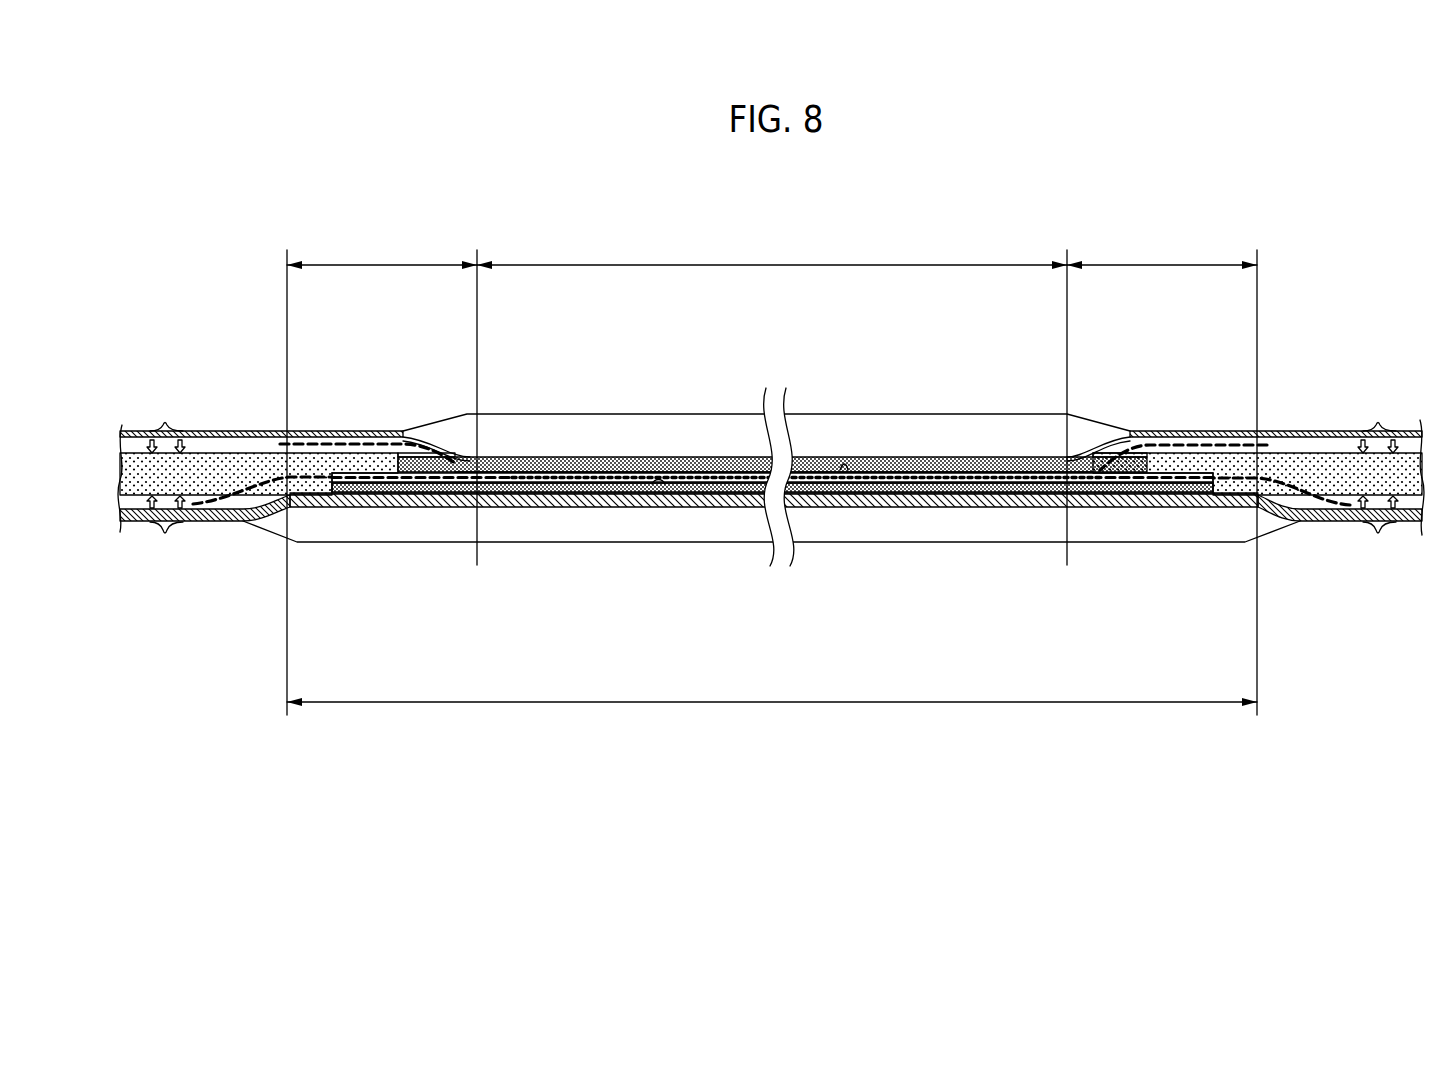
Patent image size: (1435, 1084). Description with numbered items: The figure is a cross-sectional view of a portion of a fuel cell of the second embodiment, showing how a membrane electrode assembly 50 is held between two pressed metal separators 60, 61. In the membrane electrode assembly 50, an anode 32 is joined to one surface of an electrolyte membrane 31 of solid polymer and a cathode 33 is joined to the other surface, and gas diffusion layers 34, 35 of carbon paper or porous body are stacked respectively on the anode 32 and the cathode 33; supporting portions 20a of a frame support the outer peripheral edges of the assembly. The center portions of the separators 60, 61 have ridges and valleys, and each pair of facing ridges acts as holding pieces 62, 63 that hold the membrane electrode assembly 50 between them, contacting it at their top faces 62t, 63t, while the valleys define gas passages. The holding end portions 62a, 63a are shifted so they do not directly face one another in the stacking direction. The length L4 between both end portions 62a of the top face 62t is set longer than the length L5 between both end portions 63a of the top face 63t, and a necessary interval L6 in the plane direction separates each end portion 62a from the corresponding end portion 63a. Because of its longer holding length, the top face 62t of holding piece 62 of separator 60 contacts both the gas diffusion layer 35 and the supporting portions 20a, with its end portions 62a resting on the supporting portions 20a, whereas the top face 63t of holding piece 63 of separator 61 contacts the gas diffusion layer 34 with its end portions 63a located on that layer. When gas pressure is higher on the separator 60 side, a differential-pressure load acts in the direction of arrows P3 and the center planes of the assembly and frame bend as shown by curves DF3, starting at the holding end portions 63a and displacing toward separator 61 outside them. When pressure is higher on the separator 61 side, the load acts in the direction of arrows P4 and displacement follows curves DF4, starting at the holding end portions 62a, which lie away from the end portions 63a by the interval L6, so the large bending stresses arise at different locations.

The supporting portions 20a is at (232, 452).
The separator 61 is at (374, 424).
The membrane electrode assembly 50 is at (774, 459).
The holding piece 63 is at (772, 389).
The holding end portion 63a is at (490, 457).
The top face 63t is at (840, 458).
The holding piece 62 is at (772, 478).
The holding end portion 62a is at (292, 505).
The top face 62t is at (658, 482).
The separator 60 is at (774, 551).
The electrolyte membrane 31 is at (895, 458).
The anode 32 is at (953, 460).
The cathode 33 is at (963, 508).
The gas diffusion layer 34 is at (1005, 458).
The gas diffusion layer 35 is at (1025, 508).
The displacement curve DF3 is at (331, 440).
The displacement curve DF4 is at (222, 522).
The differential-pressure load direction P4 is at (772, 417).
The differential-pressure load direction P3 is at (772, 538).
The length of top face 62t L4 is at (772, 689).
The length of top face 63t L5 is at (772, 252).
The interval L6 is at (772, 252).